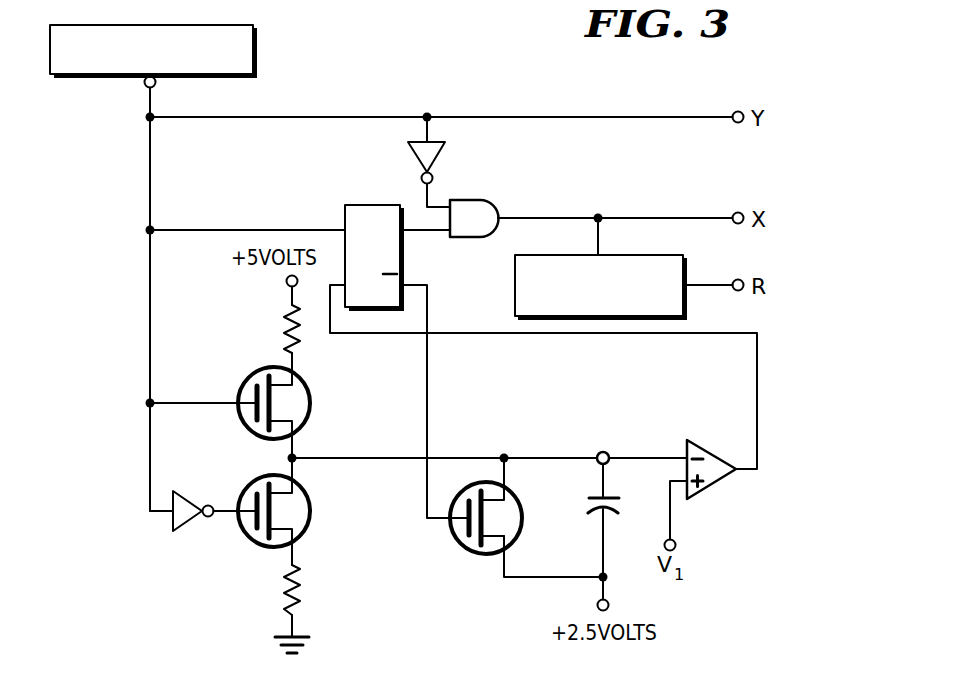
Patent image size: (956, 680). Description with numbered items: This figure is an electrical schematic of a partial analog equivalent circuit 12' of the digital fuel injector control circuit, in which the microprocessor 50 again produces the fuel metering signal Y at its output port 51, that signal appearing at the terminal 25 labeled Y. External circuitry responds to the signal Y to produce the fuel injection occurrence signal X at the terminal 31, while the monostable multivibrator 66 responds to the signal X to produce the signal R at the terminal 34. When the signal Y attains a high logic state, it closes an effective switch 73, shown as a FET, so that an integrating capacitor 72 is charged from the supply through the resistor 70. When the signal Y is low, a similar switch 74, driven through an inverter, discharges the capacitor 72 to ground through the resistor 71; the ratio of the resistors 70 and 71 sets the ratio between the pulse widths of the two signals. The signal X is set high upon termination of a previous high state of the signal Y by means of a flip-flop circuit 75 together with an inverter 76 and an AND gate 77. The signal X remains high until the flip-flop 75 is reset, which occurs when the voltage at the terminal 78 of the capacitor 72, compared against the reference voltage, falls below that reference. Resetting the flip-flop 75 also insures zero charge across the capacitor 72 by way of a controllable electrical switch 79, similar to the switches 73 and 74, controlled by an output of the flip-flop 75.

The partial analog equivalent circuit 12' is at (589, 63).
The microprocessor 50 is at (257, 50).
The output port 51 is at (145, 86).
The Y output terminal 25 is at (738, 111).
The terminal 31 is at (738, 212).
The terminal 34 is at (738, 279).
The flip-flop circuit 75 is at (345, 207).
The inverter 76 is at (409, 150).
The AND gate 77 is at (476, 199).
The monostable multivibrator 66 is at (515, 285).
The resistor 70 is at (284, 330).
The switch 73 is at (310, 403).
The switch 74 is at (310, 511).
The resistor 71 is at (300, 584).
The controllable electrical switch 79 is at (522, 518).
The terminal 78 is at (603, 452).
The integrating capacitor 72 is at (620, 505).